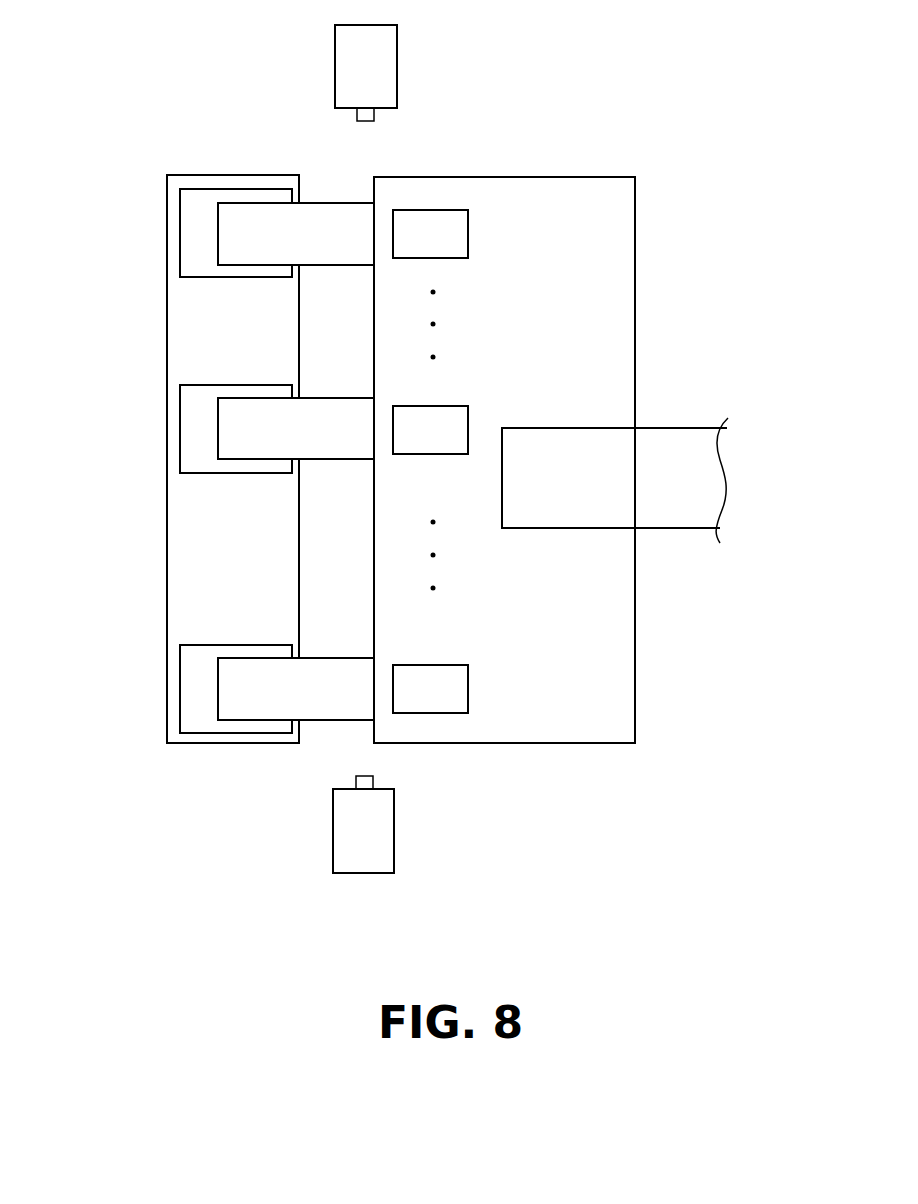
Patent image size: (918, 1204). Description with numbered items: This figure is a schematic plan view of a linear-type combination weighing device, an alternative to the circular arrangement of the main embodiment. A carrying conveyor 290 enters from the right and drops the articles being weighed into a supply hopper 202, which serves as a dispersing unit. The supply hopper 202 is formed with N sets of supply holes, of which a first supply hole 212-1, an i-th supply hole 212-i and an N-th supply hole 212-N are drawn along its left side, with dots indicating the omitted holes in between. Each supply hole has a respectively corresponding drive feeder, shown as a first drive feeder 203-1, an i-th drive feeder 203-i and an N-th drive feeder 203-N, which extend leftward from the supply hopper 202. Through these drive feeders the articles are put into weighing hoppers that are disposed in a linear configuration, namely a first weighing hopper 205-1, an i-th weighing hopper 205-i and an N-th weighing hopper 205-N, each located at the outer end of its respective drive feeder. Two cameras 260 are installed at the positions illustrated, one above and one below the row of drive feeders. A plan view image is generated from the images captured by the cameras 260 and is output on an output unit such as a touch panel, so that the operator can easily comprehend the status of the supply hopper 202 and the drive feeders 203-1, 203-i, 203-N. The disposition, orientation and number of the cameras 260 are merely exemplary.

The supply hopper 202 is at (505, 177).
The drive feeder 203-1 is at (329, 204).
The drive feeder 203-i is at (320, 399).
The drive feeder 203-N is at (310, 721).
The weighing hopper 205-1 is at (178, 232).
The weighing hopper 205-i is at (178, 429).
The weighing hopper 205-N is at (178, 687).
The supply hole 212-1 is at (425, 208).
The supply hole 212-i is at (440, 406).
The supply hole 212-N is at (468, 688).
The camera 260 is at (397, 58).
The carrying conveyor 290 is at (613, 428).